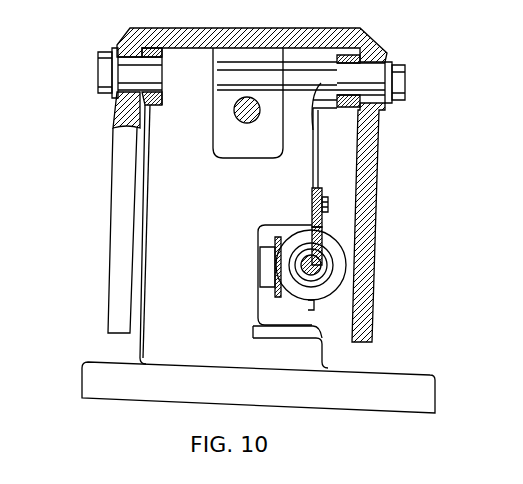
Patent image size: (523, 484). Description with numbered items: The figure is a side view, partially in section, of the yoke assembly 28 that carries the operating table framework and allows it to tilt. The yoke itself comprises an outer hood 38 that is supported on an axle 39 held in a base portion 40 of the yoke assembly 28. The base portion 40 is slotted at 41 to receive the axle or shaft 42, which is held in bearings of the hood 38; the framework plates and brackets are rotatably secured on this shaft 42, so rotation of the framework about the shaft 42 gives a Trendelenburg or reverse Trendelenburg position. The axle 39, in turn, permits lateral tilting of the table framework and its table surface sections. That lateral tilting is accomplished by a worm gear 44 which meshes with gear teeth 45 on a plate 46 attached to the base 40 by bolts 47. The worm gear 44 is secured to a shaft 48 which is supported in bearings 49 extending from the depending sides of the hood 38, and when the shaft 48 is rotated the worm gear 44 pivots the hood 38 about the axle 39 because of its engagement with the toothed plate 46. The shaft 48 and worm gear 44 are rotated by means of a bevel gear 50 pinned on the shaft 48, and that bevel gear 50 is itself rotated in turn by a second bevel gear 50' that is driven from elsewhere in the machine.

The yoke assembly 28 is at (82, 368).
The outer hood 38 is at (206, 30).
The axle 39 is at (255, 70).
The base portion 40 is at (430, 390).
The slot 41 is at (213, 126).
The axle or shaft 42 is at (235, 110).
The worm gear 44 is at (305, 332).
The gear teeth 45 is at (318, 252).
The plate 46 is at (316, 188).
The bolts 47 is at (327, 208).
The shaft 48 is at (307, 252).
The bearings 49 is at (355, 245).
The bevel gear 50 is at (330, 313).
The bevel gear 50' is at (255, 277).